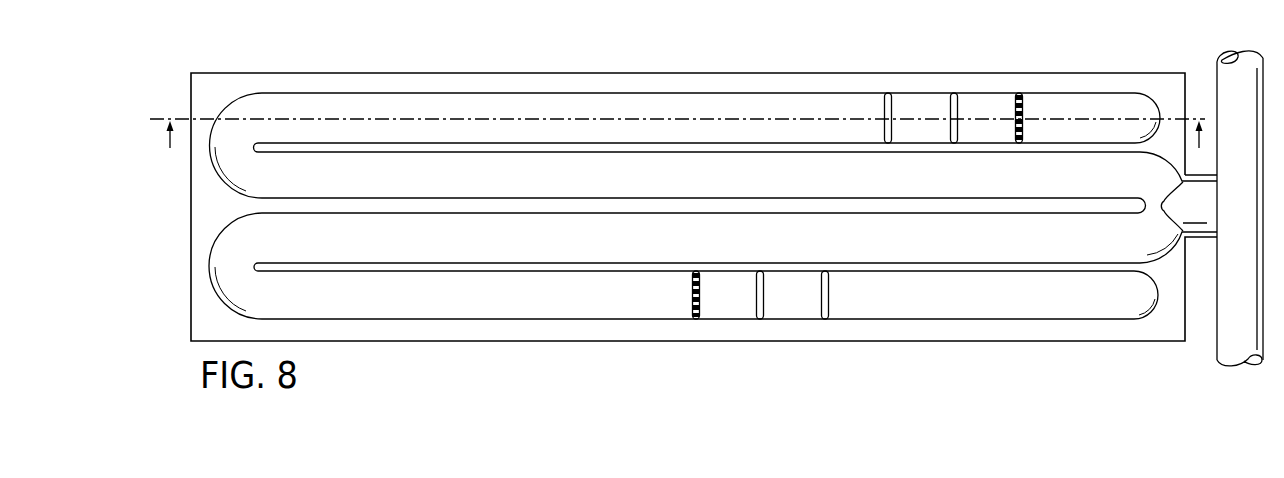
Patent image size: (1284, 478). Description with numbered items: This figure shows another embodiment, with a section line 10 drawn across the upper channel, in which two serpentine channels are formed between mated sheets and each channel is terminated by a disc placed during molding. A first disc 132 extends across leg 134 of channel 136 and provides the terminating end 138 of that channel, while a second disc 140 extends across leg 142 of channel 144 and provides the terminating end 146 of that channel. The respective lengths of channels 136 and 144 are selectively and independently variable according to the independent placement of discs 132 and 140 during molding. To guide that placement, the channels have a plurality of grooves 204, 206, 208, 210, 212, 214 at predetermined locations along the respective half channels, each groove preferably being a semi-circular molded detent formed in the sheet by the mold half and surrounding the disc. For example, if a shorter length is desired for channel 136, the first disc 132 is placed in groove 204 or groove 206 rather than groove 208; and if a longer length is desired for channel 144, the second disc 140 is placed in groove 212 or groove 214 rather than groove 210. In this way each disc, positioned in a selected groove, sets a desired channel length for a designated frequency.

The section line 10- 10 is at (679, 148).
The first disc 132 is at (1023, 103).
The leg 134 is at (624, 104).
The channel 136 is at (938, 190).
The terminating end 138 is at (1034, 110).
The second disc 140 is at (692, 293).
The leg 142 is at (497, 312).
The channel 144 is at (938, 251).
The terminating end 146 is at (712, 304).
The groove 204 is at (888, 93).
The groove 206 is at (954, 92).
The groove 208 is at (1019, 92).
The groove 210 is at (696, 322).
The groove 212 is at (762, 322).
The groove 214 is at (826, 322).